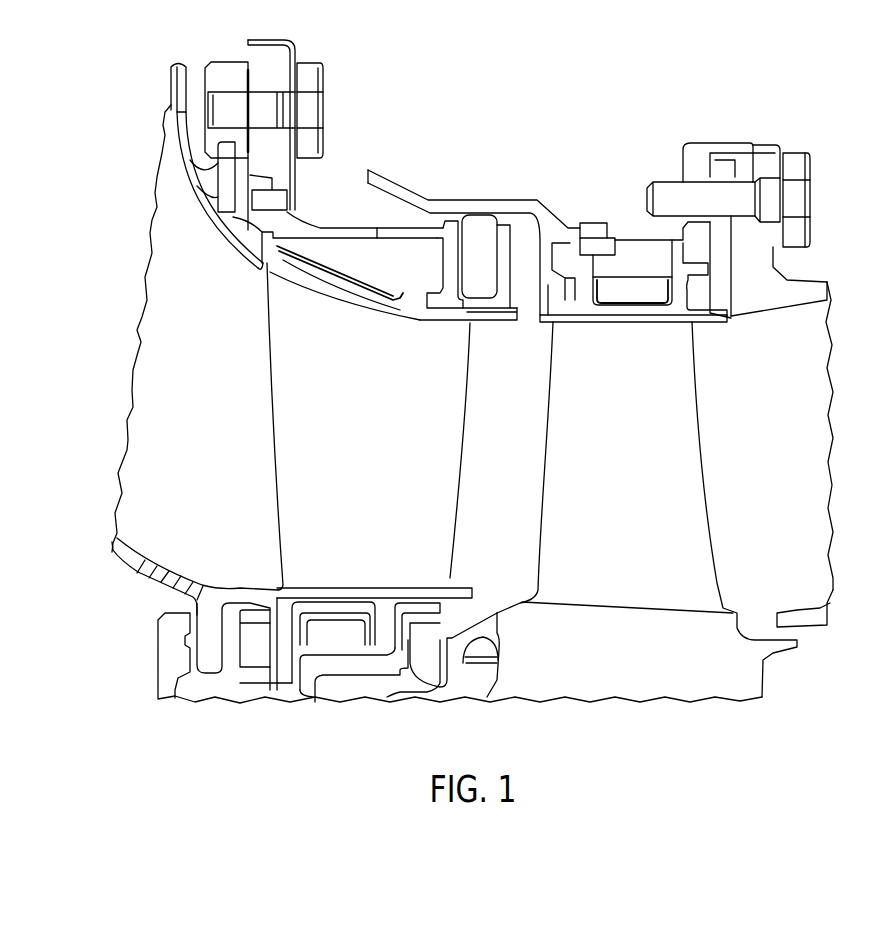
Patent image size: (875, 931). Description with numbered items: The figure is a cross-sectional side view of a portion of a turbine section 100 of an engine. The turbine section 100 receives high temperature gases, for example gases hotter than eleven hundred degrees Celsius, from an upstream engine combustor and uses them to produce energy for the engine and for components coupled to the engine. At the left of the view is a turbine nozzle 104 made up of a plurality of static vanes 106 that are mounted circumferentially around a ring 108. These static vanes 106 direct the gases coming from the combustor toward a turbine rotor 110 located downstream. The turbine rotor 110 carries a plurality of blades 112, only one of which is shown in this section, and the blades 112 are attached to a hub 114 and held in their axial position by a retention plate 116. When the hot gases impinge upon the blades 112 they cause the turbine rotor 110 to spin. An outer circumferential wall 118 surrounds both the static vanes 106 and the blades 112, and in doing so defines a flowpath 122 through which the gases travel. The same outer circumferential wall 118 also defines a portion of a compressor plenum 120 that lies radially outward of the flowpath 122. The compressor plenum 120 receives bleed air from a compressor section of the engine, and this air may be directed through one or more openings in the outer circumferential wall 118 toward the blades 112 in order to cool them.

The turbine section 100 is at (586, 87).
The turbine nozzle 104 is at (337, 594).
The static vanes 106 is at (307, 533).
The ring 108 is at (282, 640).
The turbine rotor 110 is at (708, 519).
The blades 112 is at (653, 436).
The hub 114 is at (645, 692).
The retention plate 116 is at (452, 658).
The outer circumferential wall 118 is at (496, 322).
The compressor plenum 120 is at (383, 212).
The flowpath 122 is at (160, 398).